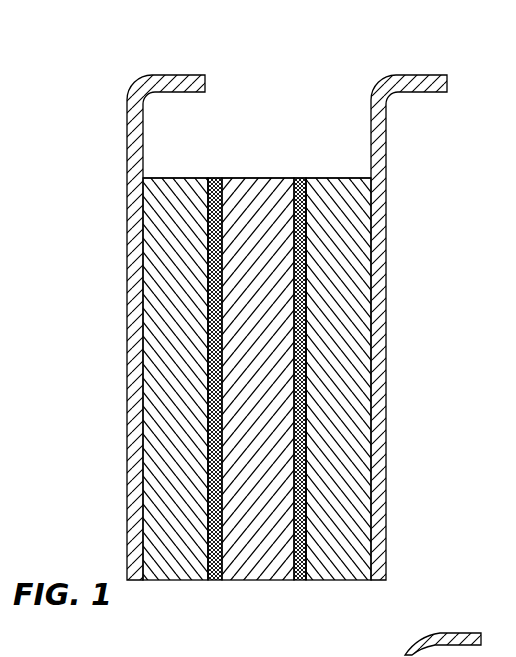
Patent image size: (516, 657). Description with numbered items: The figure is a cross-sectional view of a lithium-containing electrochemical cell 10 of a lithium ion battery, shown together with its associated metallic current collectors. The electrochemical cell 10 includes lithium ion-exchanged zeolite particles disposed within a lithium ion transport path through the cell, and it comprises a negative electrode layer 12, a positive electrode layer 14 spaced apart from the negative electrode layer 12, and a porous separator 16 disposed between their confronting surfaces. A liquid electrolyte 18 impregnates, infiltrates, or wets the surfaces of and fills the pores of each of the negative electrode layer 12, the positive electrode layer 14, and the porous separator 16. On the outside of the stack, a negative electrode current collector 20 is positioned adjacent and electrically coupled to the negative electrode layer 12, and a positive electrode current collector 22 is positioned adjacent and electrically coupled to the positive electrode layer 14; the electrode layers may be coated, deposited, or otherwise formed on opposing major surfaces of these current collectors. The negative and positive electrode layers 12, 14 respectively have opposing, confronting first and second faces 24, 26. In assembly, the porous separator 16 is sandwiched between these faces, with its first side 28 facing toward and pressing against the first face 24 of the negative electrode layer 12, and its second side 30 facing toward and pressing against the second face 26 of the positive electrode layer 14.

The lithium-containing electrochemical cell 10 is at (105, 64).
The negative electrode layer 12 is at (172, 582).
The positive electrode layer 14 is at (352, 582).
The porous separator 16 is at (260, 389).
The liquid electrolyte 18 is at (258, 210).
The negative electrode current collector 20 is at (127, 372).
The positive electrode current collector 22 is at (386, 372).
The first face 24 is at (212, 525).
The second face 26 is at (302, 525).
The first side 28 is at (207, 260).
The second side 30 is at (306, 260).